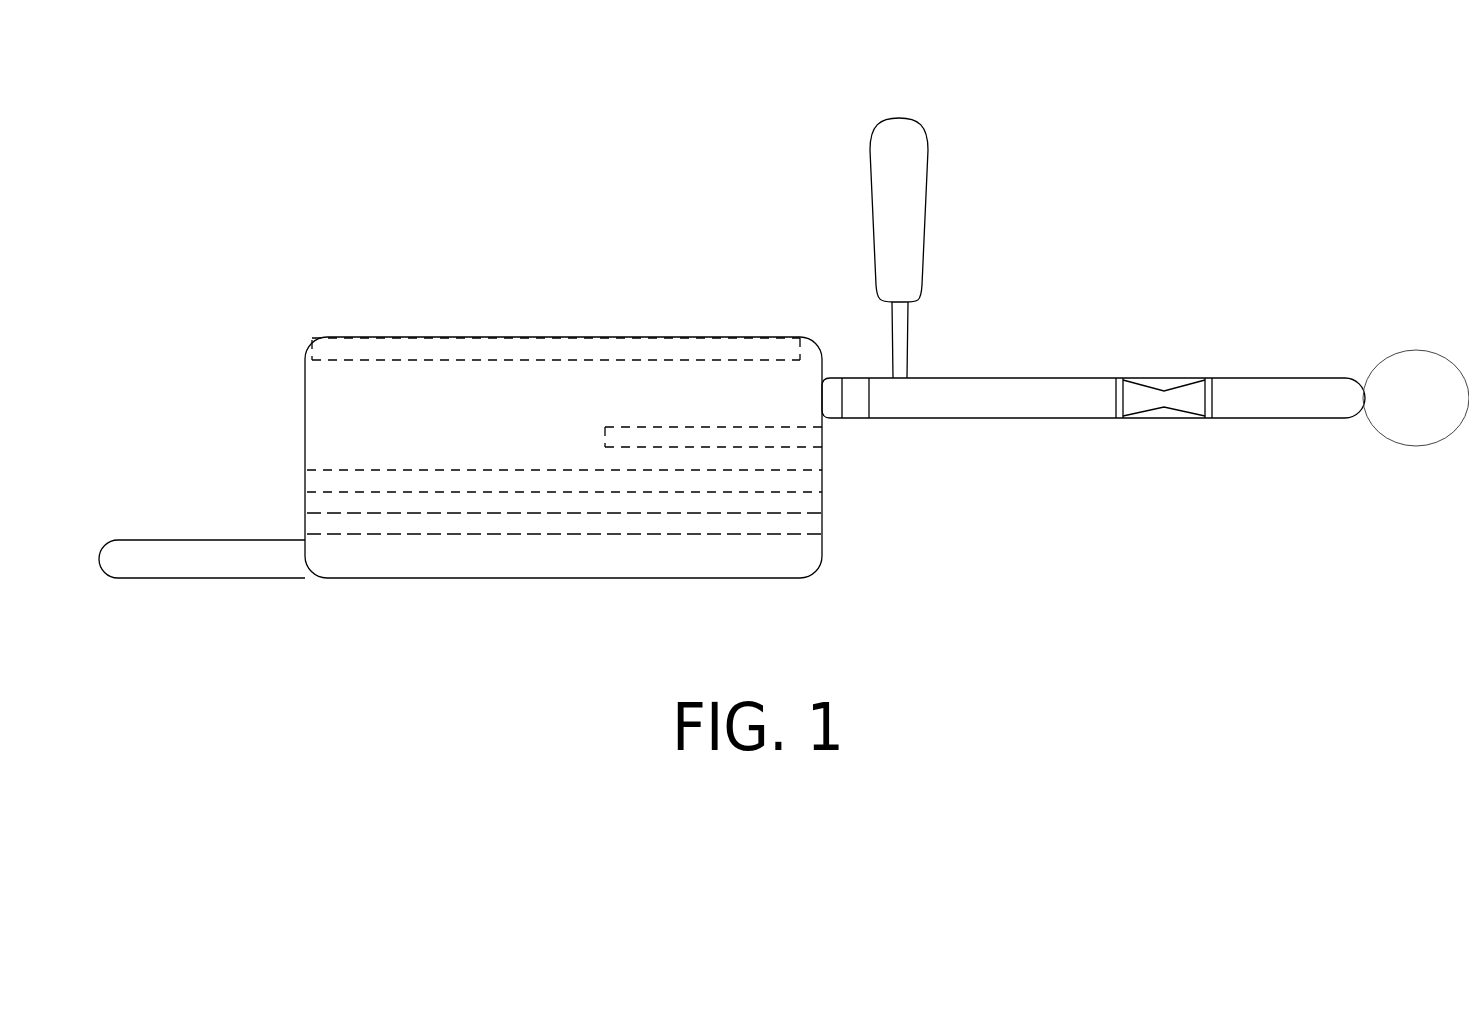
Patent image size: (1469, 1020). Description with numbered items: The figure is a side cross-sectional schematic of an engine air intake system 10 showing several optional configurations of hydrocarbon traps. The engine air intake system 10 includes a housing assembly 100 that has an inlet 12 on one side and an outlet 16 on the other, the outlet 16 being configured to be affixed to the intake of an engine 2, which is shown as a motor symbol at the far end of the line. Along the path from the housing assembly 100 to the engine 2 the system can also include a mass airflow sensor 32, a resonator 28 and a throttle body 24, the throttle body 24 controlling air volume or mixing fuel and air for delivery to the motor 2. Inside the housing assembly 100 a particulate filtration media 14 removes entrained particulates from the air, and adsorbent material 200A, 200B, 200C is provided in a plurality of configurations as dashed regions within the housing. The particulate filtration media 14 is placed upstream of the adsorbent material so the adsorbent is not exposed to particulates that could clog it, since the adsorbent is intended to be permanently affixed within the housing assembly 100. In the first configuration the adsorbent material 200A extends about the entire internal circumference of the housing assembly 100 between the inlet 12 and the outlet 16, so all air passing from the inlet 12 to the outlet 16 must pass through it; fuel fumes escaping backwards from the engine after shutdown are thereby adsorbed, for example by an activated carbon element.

The engine air intake system 10 is at (511, 128).
The housing assembly 100 is at (296, 403).
The adsorbent material 200C is at (627, 353).
The adsorbent material 200B is at (812, 440).
The adsorbent material 200A is at (794, 485).
The particulate filtration media 14 is at (505, 518).
The inlet 12 is at (203, 565).
The mass airflow sensor 32 is at (853, 375).
The outlet 16 is at (990, 400).
The resonator 28 is at (903, 207).
The throttle body 24 is at (1177, 395).
The engine 2 is at (1416, 352).